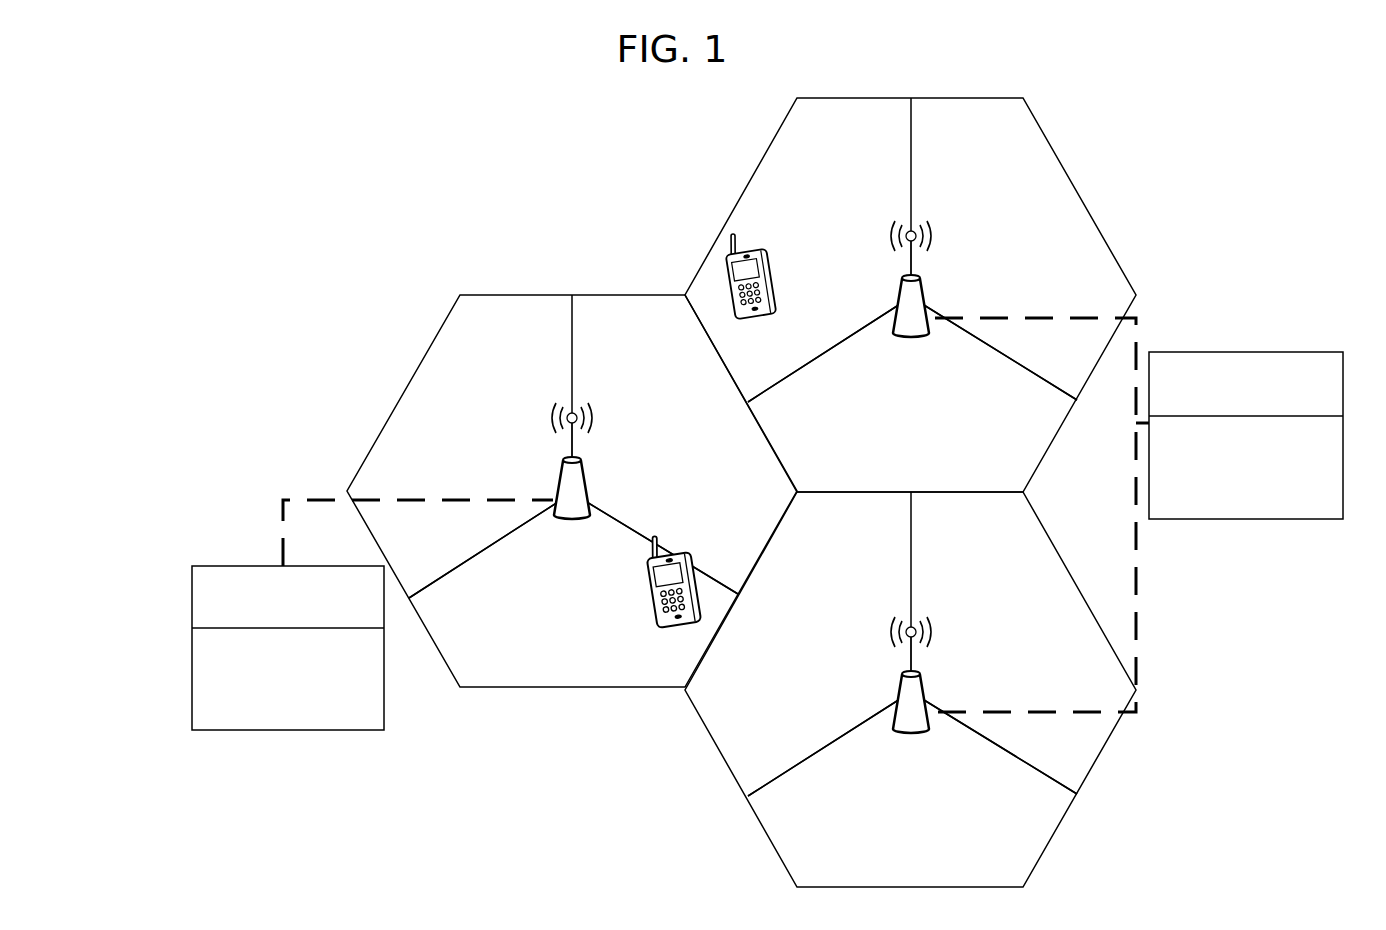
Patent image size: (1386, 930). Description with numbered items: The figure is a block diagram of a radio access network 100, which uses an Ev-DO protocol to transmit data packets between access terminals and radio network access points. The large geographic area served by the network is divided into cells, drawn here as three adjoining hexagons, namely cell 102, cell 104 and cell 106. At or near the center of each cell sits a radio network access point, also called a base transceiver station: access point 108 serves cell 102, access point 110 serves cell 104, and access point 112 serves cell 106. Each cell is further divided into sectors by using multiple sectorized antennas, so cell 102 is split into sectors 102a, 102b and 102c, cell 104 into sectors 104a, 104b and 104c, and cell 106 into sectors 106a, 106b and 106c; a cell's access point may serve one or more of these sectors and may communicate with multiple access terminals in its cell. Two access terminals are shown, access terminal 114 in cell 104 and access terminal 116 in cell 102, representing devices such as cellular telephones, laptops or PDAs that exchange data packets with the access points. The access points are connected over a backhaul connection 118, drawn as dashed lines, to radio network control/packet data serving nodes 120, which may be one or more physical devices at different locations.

The radio access network 100 is at (505, 180).
The cell 102 is at (403, 370).
The sector 102a is at (438, 451).
The sector 102b is at (627, 451).
The sector 102c is at (544, 660).
The cell 104 is at (1068, 158).
The sector 104a is at (804, 238).
The sector 104b is at (990, 257).
The sector 104c is at (899, 433).
The cell 106 is at (712, 793).
The sector 106a is at (795, 622).
The sector 106b is at (980, 652).
The sector 106c is at (885, 850).
The radio network access point 108 is at (553, 515).
The radio network access point 110 is at (893, 335).
The radio network access point 112 is at (893, 732).
The access terminal 114 is at (777, 315).
The access terminal 116 is at (656, 620).
The backhaul connection 118 is at (282, 518).
The radio network control/packet data serving node 120 is at (767, 541).